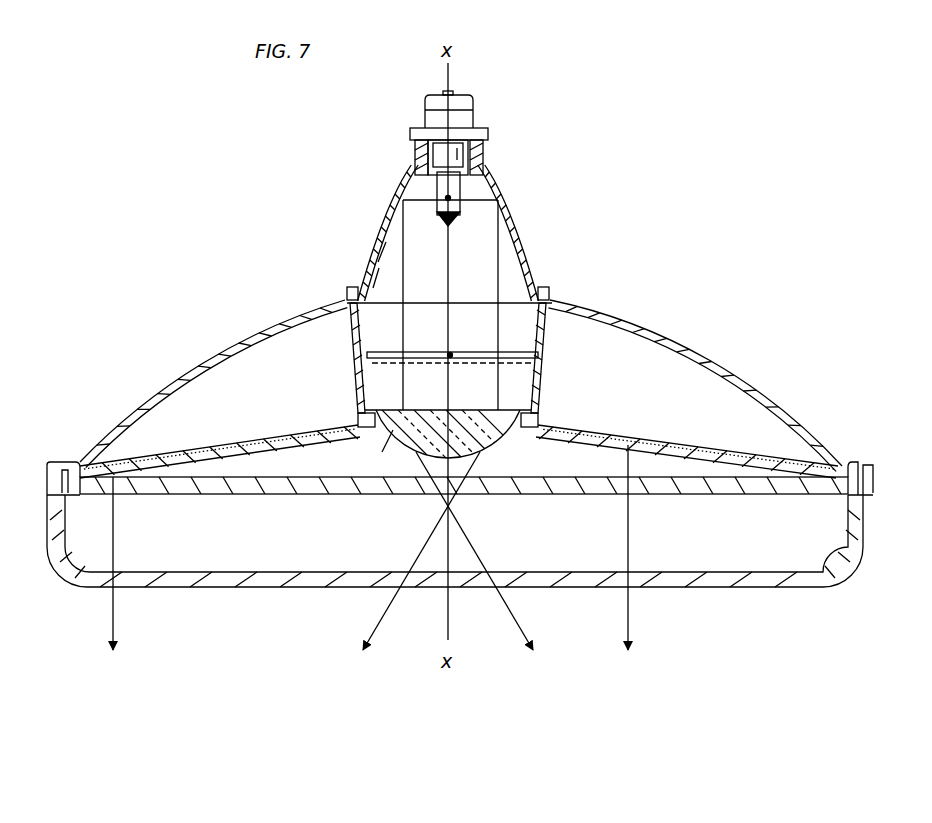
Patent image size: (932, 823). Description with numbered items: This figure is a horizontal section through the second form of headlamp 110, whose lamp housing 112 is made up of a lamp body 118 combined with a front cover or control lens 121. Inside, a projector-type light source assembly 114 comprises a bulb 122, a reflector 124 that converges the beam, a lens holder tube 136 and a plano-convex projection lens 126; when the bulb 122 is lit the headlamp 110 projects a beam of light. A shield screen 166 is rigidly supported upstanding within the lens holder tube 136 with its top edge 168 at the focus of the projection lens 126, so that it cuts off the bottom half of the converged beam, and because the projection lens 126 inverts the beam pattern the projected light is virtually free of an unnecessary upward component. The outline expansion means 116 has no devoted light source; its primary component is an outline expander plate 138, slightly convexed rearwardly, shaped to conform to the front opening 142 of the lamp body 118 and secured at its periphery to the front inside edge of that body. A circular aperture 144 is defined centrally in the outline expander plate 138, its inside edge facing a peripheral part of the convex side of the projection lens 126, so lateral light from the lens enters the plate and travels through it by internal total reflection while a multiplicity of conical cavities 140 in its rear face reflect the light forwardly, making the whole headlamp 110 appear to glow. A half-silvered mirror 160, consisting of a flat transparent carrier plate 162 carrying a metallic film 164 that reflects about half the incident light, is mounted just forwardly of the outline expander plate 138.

The headlamp 110 is at (682, 221).
The lamp housing 112 is at (122, 410).
The projector-type light source assembly 114 is at (530, 230).
The outline expansion means 116 is at (268, 460).
The lamp body 118 is at (660, 336).
The front cover or control lens 121 is at (213, 590).
The bulb 122 is at (432, 188).
The reflector 124 is at (532, 212).
The plano-convex projection lens 126 is at (378, 402).
The lens holder tube 136 is at (351, 342).
The outline expander plate 138 is at (587, 428).
The conical cavities 140 is at (225, 445).
The front opening 142 is at (850, 497).
The aperture 144 is at (386, 453).
The half-silvered mirror 160 is at (716, 497).
The flat carrier plate 162 is at (515, 495).
The metallic film 164 is at (592, 496).
The shield screen 166 is at (520, 351).
The top edge 168 is at (418, 351).